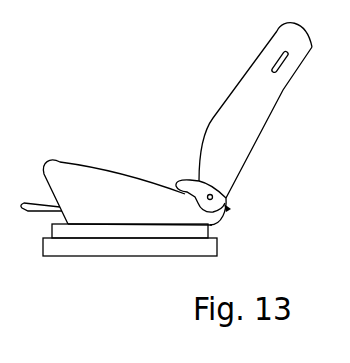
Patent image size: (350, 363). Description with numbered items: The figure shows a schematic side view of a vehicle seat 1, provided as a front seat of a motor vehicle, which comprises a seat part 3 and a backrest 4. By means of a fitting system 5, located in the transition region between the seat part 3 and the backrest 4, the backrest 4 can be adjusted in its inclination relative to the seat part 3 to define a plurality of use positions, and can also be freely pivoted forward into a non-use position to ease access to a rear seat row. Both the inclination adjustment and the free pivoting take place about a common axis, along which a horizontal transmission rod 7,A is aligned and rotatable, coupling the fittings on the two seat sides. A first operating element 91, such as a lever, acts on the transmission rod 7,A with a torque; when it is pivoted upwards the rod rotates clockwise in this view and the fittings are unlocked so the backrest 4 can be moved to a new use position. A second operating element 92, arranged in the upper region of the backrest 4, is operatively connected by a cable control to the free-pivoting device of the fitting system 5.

The vehicle seat 1 is at (100, 108).
The seat part 3 is at (67, 175).
The backrest 4 is at (237, 112).
The fitting system 5 is at (229, 210).
The transmission rod and axis 7,A is at (213, 197).
The first operating element 91 is at (187, 180).
The second operating element 92 is at (272, 68).